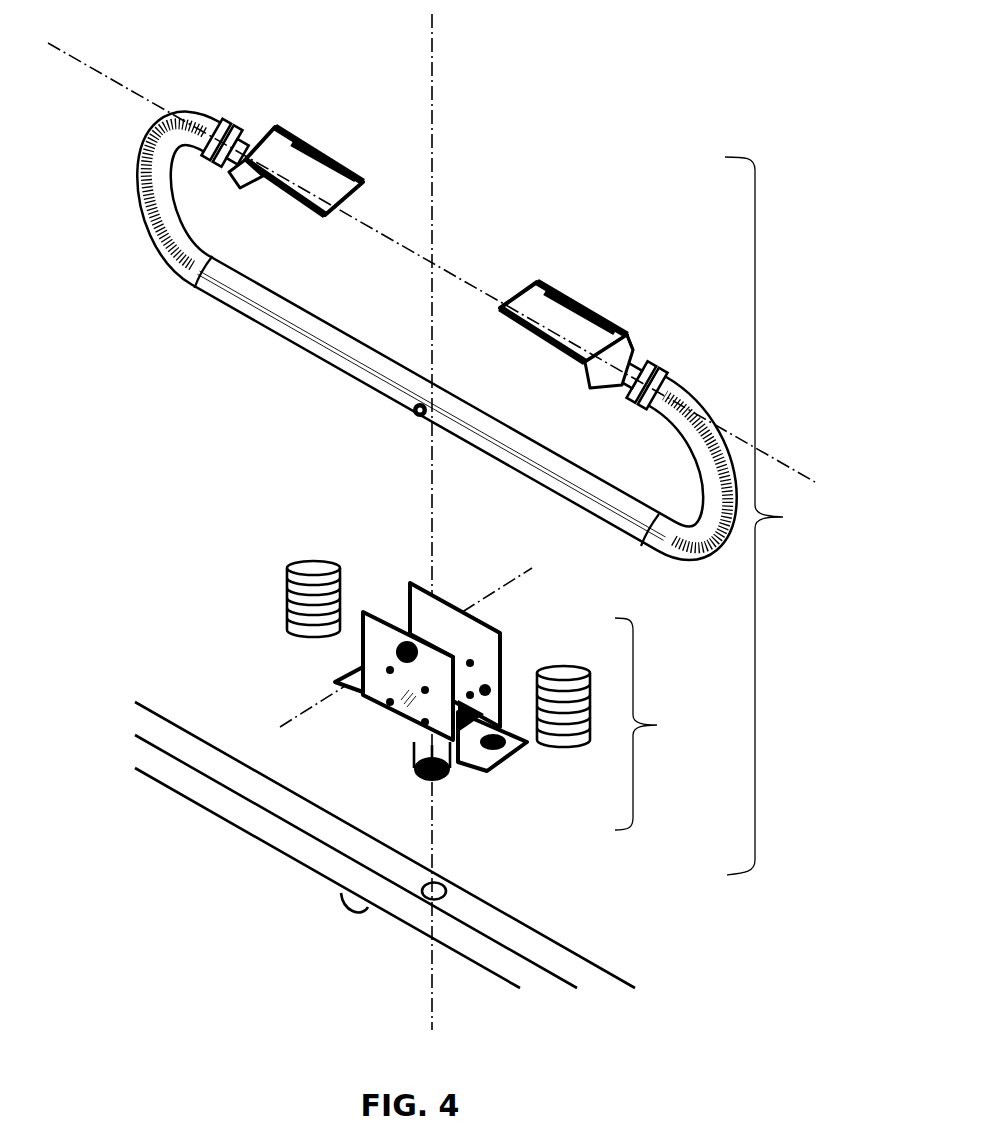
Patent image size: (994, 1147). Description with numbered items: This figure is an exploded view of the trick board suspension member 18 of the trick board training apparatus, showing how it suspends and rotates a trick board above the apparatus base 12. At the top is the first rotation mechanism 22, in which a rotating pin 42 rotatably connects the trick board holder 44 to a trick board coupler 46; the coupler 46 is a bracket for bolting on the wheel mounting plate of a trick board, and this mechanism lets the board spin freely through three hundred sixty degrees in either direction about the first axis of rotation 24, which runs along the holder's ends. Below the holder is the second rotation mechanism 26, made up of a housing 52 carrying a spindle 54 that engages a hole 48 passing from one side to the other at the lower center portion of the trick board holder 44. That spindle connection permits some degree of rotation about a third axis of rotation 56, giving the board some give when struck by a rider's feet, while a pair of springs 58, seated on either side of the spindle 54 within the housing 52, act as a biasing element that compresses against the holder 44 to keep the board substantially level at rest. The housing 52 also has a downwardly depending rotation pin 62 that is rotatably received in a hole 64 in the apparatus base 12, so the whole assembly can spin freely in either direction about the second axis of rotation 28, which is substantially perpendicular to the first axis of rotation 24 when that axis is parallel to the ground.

The apparatus base 12 is at (230, 815).
The handle assembly 18 is at (786, 282).
The first rotation mechanism 22 is at (630, 347).
The first axis of rotation 24 is at (91, 70).
The second rotation mechanism 26 is at (641, 684).
The second axis of rotation 28 is at (422, 112).
The rotating pin 42 is at (619, 372).
The trick board holder 44 is at (266, 316).
The trick board coupler 46 is at (302, 175).
The hole 48 is at (423, 418).
The housing 52 is at (347, 673).
The spindle 54 is at (497, 630).
The third axis of rotation 56 is at (523, 573).
The springs 58 is at (290, 582).
The rotation pin 62 is at (440, 783).
The hole 64 is at (450, 890).